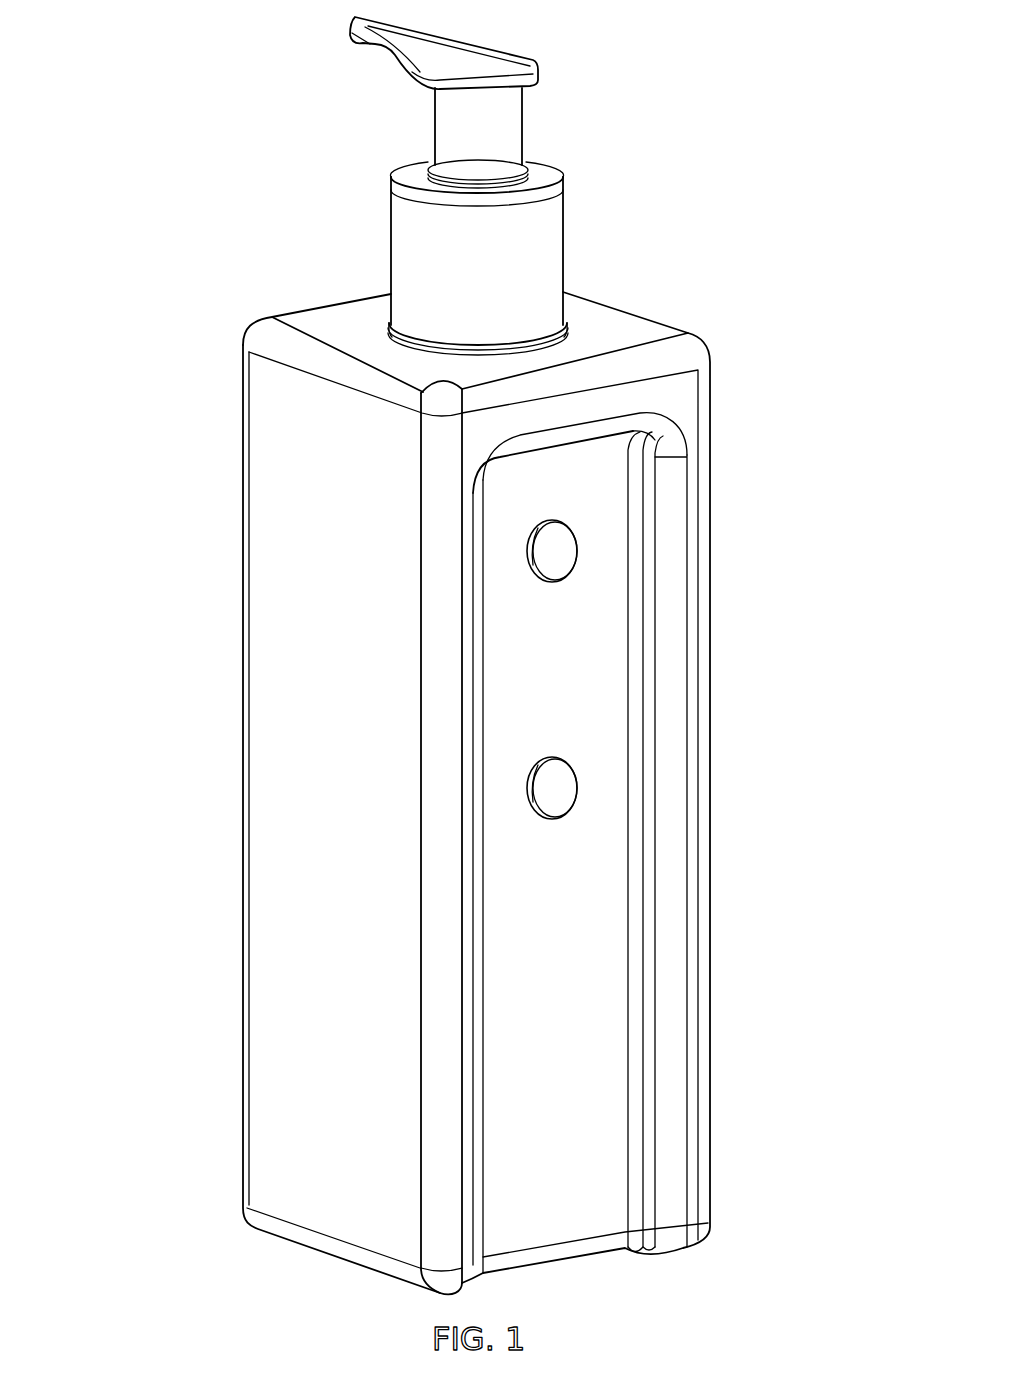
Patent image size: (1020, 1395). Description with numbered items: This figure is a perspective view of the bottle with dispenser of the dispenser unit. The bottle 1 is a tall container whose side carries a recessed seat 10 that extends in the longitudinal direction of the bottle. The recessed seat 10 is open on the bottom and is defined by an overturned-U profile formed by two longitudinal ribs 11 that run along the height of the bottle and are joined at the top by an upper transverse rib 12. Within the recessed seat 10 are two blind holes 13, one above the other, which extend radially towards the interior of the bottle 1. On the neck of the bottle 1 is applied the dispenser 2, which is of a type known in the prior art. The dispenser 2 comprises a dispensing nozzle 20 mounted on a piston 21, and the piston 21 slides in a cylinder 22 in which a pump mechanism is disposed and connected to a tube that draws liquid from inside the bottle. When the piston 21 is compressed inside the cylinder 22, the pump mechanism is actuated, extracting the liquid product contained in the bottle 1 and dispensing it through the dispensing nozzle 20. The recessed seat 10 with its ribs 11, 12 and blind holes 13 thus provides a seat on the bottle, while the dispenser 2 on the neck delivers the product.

The bottle 1 is at (464, 647).
The dispenser 2 is at (457, 178).
The recessed seat 10 is at (612, 948).
The longitudinal ribs 11 is at (672, 702).
The upper transverse rib 12 is at (578, 434).
The blind holes 13 is at (576, 555).
The dispensing nozzle 20 is at (355, 47).
The piston 21 is at (510, 130).
The cylinder 22 is at (418, 230).